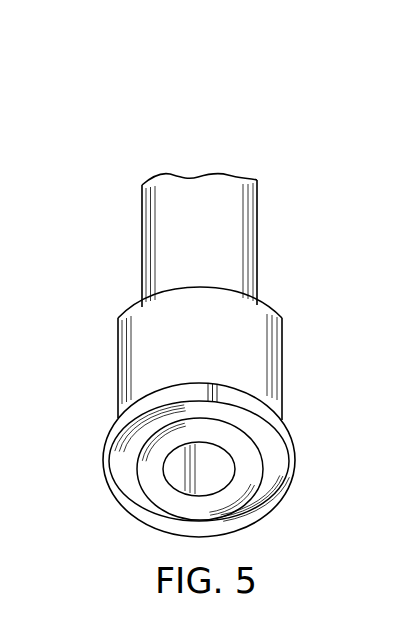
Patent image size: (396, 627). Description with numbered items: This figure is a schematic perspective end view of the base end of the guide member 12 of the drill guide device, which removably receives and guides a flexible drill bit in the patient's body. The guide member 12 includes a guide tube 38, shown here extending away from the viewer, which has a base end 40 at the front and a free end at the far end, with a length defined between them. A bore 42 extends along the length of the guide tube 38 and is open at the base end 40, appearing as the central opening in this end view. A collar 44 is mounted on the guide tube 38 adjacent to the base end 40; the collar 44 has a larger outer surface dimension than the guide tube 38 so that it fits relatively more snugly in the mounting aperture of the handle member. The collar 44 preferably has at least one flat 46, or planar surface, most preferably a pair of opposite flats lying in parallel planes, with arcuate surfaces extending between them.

The guide member 12 is at (231, 122).
The guide tube 38 is at (248, 220).
The flat 46 is at (247, 352).
The collar 44 is at (275, 497).
The base end 40 is at (158, 485).
The bore 42 is at (178, 468).